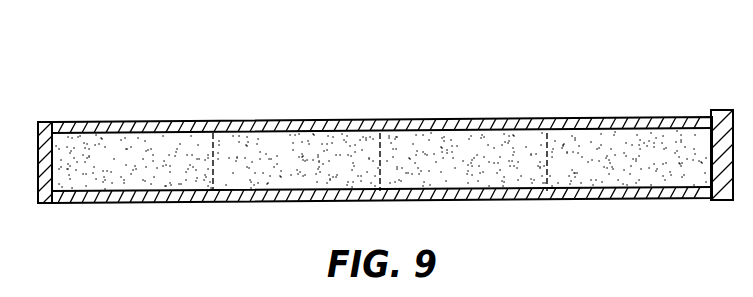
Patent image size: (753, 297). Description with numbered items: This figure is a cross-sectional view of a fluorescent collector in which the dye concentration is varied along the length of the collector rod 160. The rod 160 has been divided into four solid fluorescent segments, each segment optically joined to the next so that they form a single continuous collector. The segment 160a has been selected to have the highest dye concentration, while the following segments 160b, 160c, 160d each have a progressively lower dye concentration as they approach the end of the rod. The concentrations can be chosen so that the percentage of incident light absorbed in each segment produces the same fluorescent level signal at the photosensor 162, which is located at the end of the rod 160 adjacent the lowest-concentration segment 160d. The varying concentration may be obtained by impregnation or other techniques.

The rod 160 is at (375, 113).
The segment 160a is at (121, 134).
The segment 160b is at (284, 135).
The segment 160c is at (481, 133).
The segment 160d is at (626, 134).
The photosensor 162 is at (733, 187).